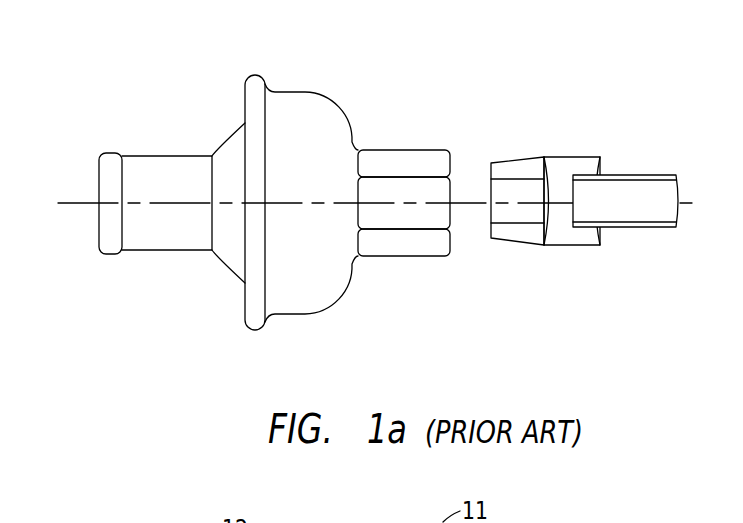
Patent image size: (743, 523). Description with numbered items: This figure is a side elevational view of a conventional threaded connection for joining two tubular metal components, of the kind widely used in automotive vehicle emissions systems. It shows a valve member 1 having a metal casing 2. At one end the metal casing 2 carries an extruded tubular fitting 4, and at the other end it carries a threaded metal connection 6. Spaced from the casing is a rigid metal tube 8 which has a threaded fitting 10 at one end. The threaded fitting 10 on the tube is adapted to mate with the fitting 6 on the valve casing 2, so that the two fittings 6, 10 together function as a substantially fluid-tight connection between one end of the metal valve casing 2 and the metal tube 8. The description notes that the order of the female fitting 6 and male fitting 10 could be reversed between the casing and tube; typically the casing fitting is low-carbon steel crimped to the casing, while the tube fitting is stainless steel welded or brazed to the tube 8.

The valve member 1 is at (174, 294).
The metal casing 2 is at (302, 314).
The extruded tubular fitting 4 is at (157, 156).
The threaded metal connection 6 is at (393, 150).
The rigid metal tube 8 is at (643, 175).
The threaded fitting 10 is at (568, 157).